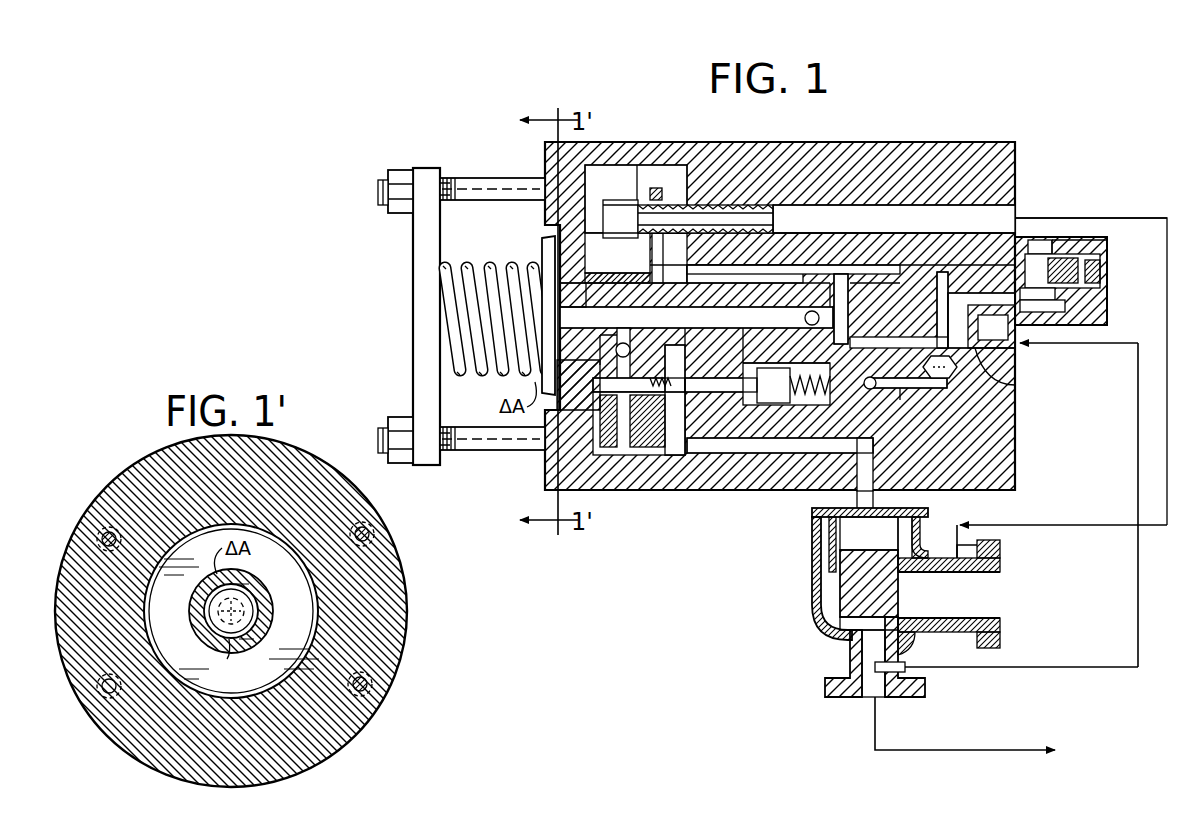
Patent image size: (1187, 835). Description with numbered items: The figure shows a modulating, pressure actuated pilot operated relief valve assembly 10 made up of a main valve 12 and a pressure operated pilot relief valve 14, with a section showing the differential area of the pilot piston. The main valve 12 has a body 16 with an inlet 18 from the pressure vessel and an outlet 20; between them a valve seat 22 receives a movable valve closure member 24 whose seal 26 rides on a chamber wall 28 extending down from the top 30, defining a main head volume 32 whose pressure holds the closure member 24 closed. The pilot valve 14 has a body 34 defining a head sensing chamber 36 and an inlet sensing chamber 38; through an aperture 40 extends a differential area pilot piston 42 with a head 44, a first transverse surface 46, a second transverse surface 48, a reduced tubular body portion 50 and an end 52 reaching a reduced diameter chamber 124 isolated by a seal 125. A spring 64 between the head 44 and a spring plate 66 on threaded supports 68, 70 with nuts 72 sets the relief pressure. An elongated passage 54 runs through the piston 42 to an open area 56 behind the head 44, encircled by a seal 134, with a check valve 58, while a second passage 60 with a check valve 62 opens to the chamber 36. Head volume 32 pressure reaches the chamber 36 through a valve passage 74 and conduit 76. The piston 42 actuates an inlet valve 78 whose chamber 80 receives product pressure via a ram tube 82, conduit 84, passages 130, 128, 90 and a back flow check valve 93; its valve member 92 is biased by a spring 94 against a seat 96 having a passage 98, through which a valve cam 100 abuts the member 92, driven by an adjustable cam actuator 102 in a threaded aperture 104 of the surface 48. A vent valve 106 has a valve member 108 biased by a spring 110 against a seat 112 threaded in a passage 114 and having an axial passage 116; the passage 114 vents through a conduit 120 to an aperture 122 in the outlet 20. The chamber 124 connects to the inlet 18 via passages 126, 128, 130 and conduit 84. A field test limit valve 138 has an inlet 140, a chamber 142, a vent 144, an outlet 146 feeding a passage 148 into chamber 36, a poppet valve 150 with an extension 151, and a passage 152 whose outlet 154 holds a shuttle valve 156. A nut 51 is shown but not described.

In FIG. 1, the valve assembly 10 is at (927, 128).
In FIG. 1, the main valve 12 is at (928, 627).
In FIG. 1, the pressure operated pilot relief valve 14 is at (614, 492).
In FIG. 1, the body 16 is at (812, 600).
In FIG. 1, the inlet 18 is at (884, 698).
In FIG. 1, the outlet 20 is at (990, 609).
In FIG. 1, the valve seat 22 is at (888, 622).
In FIG. 1, the movable valve closure member 24 is at (880, 593).
In FIG. 1, the seal 26 is at (912, 566).
In FIG. 1, the chamber wall 28 is at (821, 530).
In FIG. 1, the top 30 is at (932, 513).
In FIG. 1, the main head volume 32 is at (880, 542).
In FIG. 1, the body 34 is at (757, 142).
In FIG. 1, the head sensing chamber 36 is at (637, 163).
In FIG. 1, the inlet sensing chamber 38 is at (788, 264).
In FIG. 1, the aperture 40 is at (578, 385).
In FIG. 1', the aperture 40 is at (250, 573).
In FIG. 1, the differential area pilot piston 42 is at (658, 306).
In FIG. 1, the head 44 is at (542, 247).
In FIG. 1, the first transverse surface 46 is at (658, 188).
In FIG. 1, the second transverse surface 48 is at (662, 442).
In FIG. 1, the reduced tubular body portion 50 is at (806, 308).
In FIG. 1', the reduced tubular body portion 50 is at (232, 659).
In FIG. 1, the nut 51 is at (614, 272).
In FIG. 1, the end 52 is at (852, 307).
In FIG. 1, the elongated passage 54 is at (722, 328).
In FIG. 1', the elongated passage 54 is at (188, 617).
In FIG. 1, the enlarged void or open area 56 is at (566, 295).
In FIG. 1', the enlarged void or open area 56 is at (254, 614).
In FIG. 1, the back flow preventer or check valve 58 is at (804, 318).
In FIG. 1, the second passage 60 is at (606, 421).
In FIG. 1, the back flow preventer or check valve 62 is at (621, 342).
In FIG. 1, the spring 64 is at (482, 380).
In FIG. 1, the spring plate 66 is at (415, 310).
In FIG. 1', the spring plate 66 is at (231, 611).
In FIG. 1, the threaded support 68 is at (487, 180).
In FIG. 1', the threaded support 68 is at (367, 688).
In FIG. 1, the threaded support 70 is at (487, 452).
In FIG. 1', the threaded support 70 is at (110, 695).
In FIG. 1, the nuts 72 is at (396, 170).
In FIG. 1, the valve passage 74 is at (770, 457).
In FIG. 1, the interconnecting conduit 76 is at (815, 506).
In FIG. 1, the inlet valve 78 is at (834, 379).
In FIG. 1, the chamber 80 is at (756, 340).
In FIG. 1, the ram tube 82 is at (905, 665).
In FIG. 1, the conduit 84 is at (1132, 508).
In FIG. 1, the discharge passage 90 is at (900, 396).
In FIG. 1, the valve member 92 is at (784, 395).
In FIG. 1, the back flow check valve 93 is at (875, 379).
In FIG. 1, the spring 94 is at (816, 396).
In FIG. 1, the seat 96 is at (714, 394).
In FIG. 1, the passage 98 is at (697, 376).
In FIG. 1, the valve cam 100 is at (645, 421).
In FIG. 1, the adjustable cam actuator 102 is at (682, 340).
In FIG. 1, the threaded aperture 104 is at (626, 370).
In FIG. 1, the vent valve 106 is at (736, 203).
In FIG. 1, the valve member 108 is at (622, 219).
In FIG. 1, the spring 110 is at (545, 209).
In FIG. 1, the seat 112 is at (638, 198).
In FIG. 1, the bore or passage 114 is at (922, 229).
In FIG. 1, the axial passage 116 is at (776, 221).
In FIG. 1, the conduit 120 is at (1062, 476).
In FIG. 1, the aperture 122 is at (982, 580).
In FIG. 1, the reduced diameter chamber 124 is at (848, 284).
In FIG. 1, the seal 125 is at (718, 266).
In FIG. 1, the passage 126 is at (884, 338).
In FIG. 1, the passage 128 is at (940, 284).
In FIG. 1, the passage 130 is at (1015, 372).
In FIG. 1, the seal 134 is at (568, 344).
In FIG. 1, the field test limit valve 138 is at (1108, 238).
In FIG. 1, the inlet 140 is at (1084, 257).
In FIG. 1, the chamber 142 is at (1080, 259).
In FIG. 1, the vent 144 is at (1100, 276).
In FIG. 1, the outlet 146 is at (1015, 251).
In FIG. 1, the passage 148 is at (932, 240).
In FIG. 1, the poppet valve 150 is at (1040, 245).
In FIG. 1, the extension 151 is at (1105, 242).
In FIG. 1, the passage 152 is at (1085, 293).
In FIG. 1, the outlet 154 is at (1040, 327).
In FIG. 1, the shuttle valve 156 is at (1085, 310).